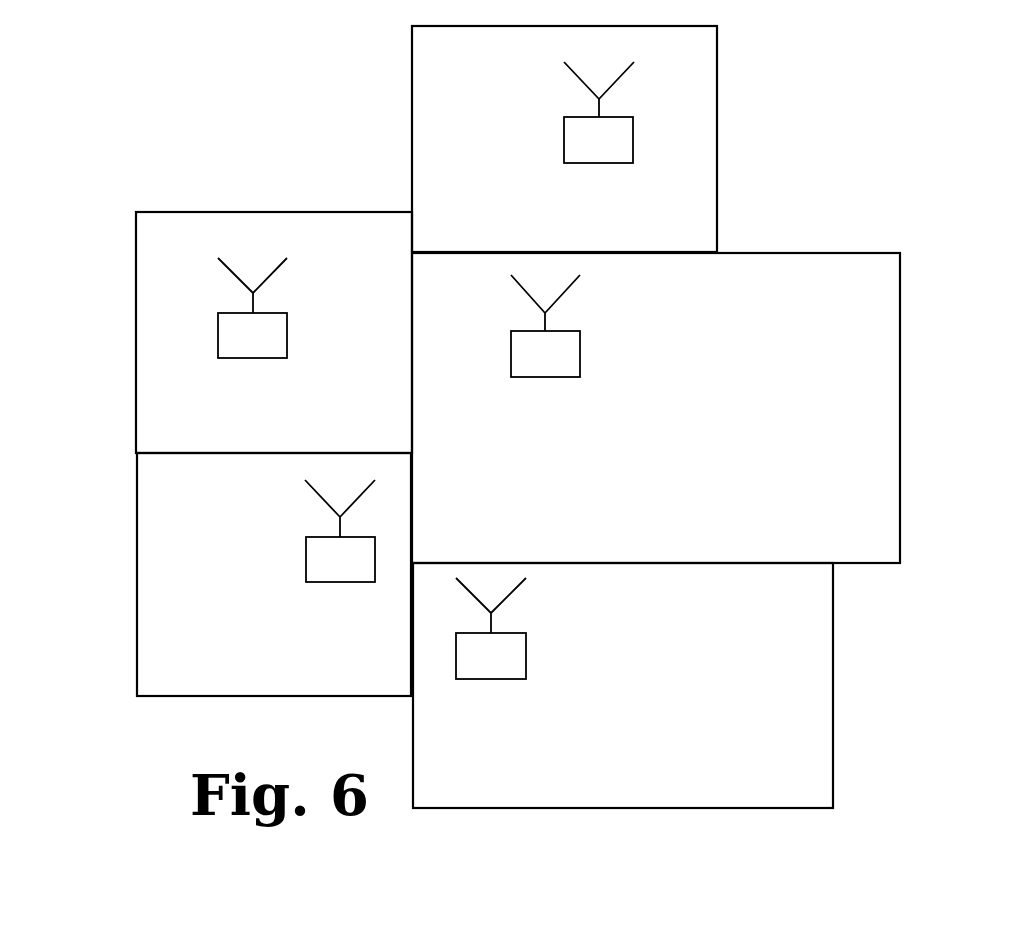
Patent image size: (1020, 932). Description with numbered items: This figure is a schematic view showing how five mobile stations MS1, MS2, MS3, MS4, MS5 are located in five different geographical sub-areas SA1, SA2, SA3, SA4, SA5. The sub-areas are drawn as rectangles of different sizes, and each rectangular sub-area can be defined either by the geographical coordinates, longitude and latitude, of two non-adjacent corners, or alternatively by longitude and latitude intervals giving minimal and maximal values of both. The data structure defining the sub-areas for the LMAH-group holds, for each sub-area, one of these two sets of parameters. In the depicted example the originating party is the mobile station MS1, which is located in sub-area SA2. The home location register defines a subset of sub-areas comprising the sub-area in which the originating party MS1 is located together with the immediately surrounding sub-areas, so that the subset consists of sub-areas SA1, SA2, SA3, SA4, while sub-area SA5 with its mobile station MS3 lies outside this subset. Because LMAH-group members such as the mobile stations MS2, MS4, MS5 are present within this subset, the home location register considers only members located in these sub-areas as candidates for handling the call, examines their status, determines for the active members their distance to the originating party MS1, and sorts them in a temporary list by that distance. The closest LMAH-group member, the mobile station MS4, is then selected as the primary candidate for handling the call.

The sub-area SA1 is at (180, 212).
The sub-area SA2 is at (137, 547).
The sub-area SA3 is at (833, 660).
The sub-area SA4 is at (797, 253).
The sub-area SA5 is at (717, 130).
The mobile station MS1 is at (342, 582).
The mobile station MS2 is at (249, 358).
The mobile station MS3 is at (564, 133).
The mobile station MS4 is at (477, 679).
The mobile station MS5 is at (538, 377).